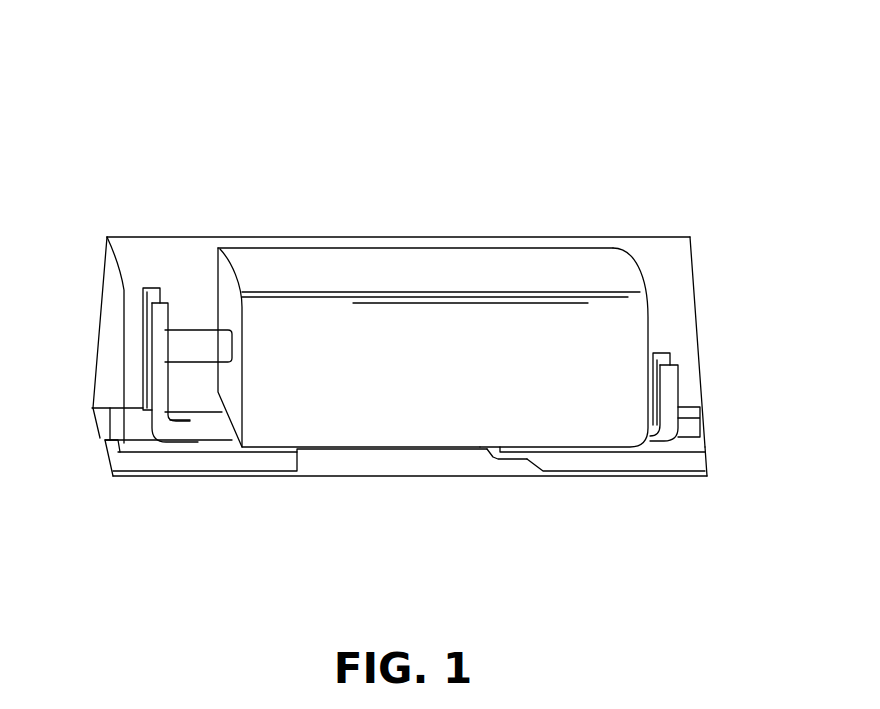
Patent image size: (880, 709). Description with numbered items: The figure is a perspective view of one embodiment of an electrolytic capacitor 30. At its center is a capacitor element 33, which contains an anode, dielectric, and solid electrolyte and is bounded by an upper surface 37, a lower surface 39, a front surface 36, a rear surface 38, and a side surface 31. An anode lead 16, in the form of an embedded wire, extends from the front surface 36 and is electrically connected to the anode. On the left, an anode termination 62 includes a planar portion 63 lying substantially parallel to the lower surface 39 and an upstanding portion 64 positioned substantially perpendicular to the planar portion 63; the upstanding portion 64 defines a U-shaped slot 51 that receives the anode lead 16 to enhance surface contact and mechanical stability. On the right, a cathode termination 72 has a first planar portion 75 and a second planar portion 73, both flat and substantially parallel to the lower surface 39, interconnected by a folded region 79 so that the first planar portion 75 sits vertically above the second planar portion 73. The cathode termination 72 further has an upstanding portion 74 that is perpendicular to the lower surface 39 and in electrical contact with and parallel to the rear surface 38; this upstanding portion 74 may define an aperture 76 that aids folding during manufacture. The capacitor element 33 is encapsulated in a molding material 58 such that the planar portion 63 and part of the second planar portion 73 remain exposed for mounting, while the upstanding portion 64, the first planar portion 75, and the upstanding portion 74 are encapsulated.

The capacitor 30 is at (359, 138).
The anode lead 16 is at (198, 355).
The side surface 31 is at (443, 398).
The capacitor element 33 is at (492, 250).
The front surface 36 is at (225, 283).
The upper surface 37 is at (325, 278).
The rear surface 38 is at (648, 317).
The lower surface 39 is at (377, 453).
The slot 51 is at (165, 290).
The molding material 58 is at (671, 252).
The anode termination 62 is at (138, 470).
The planar portion 63 is at (232, 468).
The upstanding portion 64 is at (152, 373).
The cathode termination 72 is at (512, 470).
The second planar portion 73 is at (687, 465).
The upstanding portion 74 is at (668, 390).
The first planar portion 75 is at (498, 460).
The aperture 76 is at (645, 390).
The folded region 79 is at (553, 450).